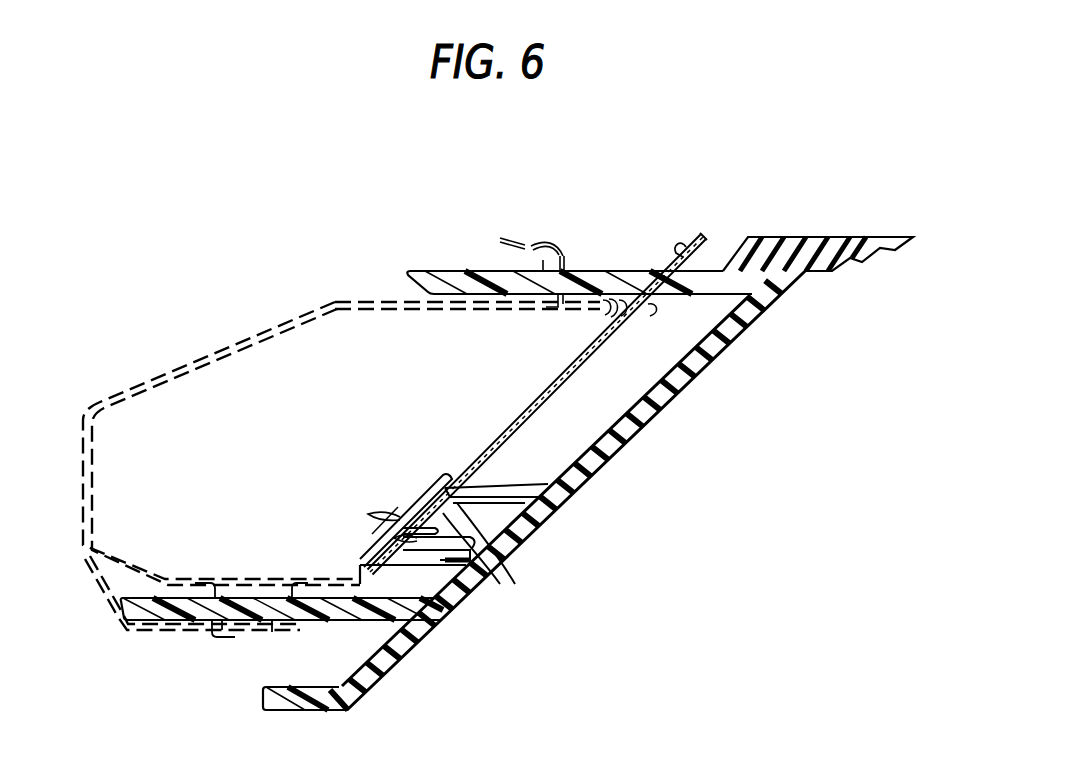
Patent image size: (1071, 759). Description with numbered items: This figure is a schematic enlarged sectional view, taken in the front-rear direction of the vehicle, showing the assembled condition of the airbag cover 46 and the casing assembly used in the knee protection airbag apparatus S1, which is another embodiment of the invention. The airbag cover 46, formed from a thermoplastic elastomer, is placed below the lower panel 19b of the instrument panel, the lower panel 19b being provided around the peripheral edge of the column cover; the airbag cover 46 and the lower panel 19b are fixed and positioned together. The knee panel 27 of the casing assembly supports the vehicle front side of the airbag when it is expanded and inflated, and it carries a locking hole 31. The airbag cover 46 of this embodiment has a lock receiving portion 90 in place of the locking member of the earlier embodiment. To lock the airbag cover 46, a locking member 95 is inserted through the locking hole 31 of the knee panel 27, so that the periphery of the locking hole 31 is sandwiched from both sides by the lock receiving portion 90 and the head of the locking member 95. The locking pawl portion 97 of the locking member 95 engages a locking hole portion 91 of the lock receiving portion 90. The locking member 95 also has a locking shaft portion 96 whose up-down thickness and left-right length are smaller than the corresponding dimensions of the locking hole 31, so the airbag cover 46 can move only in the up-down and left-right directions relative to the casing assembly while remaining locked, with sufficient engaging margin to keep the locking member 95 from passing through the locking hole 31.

The lower panel 19b is at (788, 237).
The knee panel 27 is at (463, 457).
The locking hole 31 is at (440, 496).
The airbag cover 46 is at (471, 613).
The lock receiving portion 90 is at (482, 492).
The locking hole portion 91 is at (540, 522).
The locking member 95 is at (401, 508).
The locking shaft portion 96 is at (410, 537).
The locking pawl portion 97 is at (520, 580).
The knee protection airbag apparatus S1 is at (114, 634).